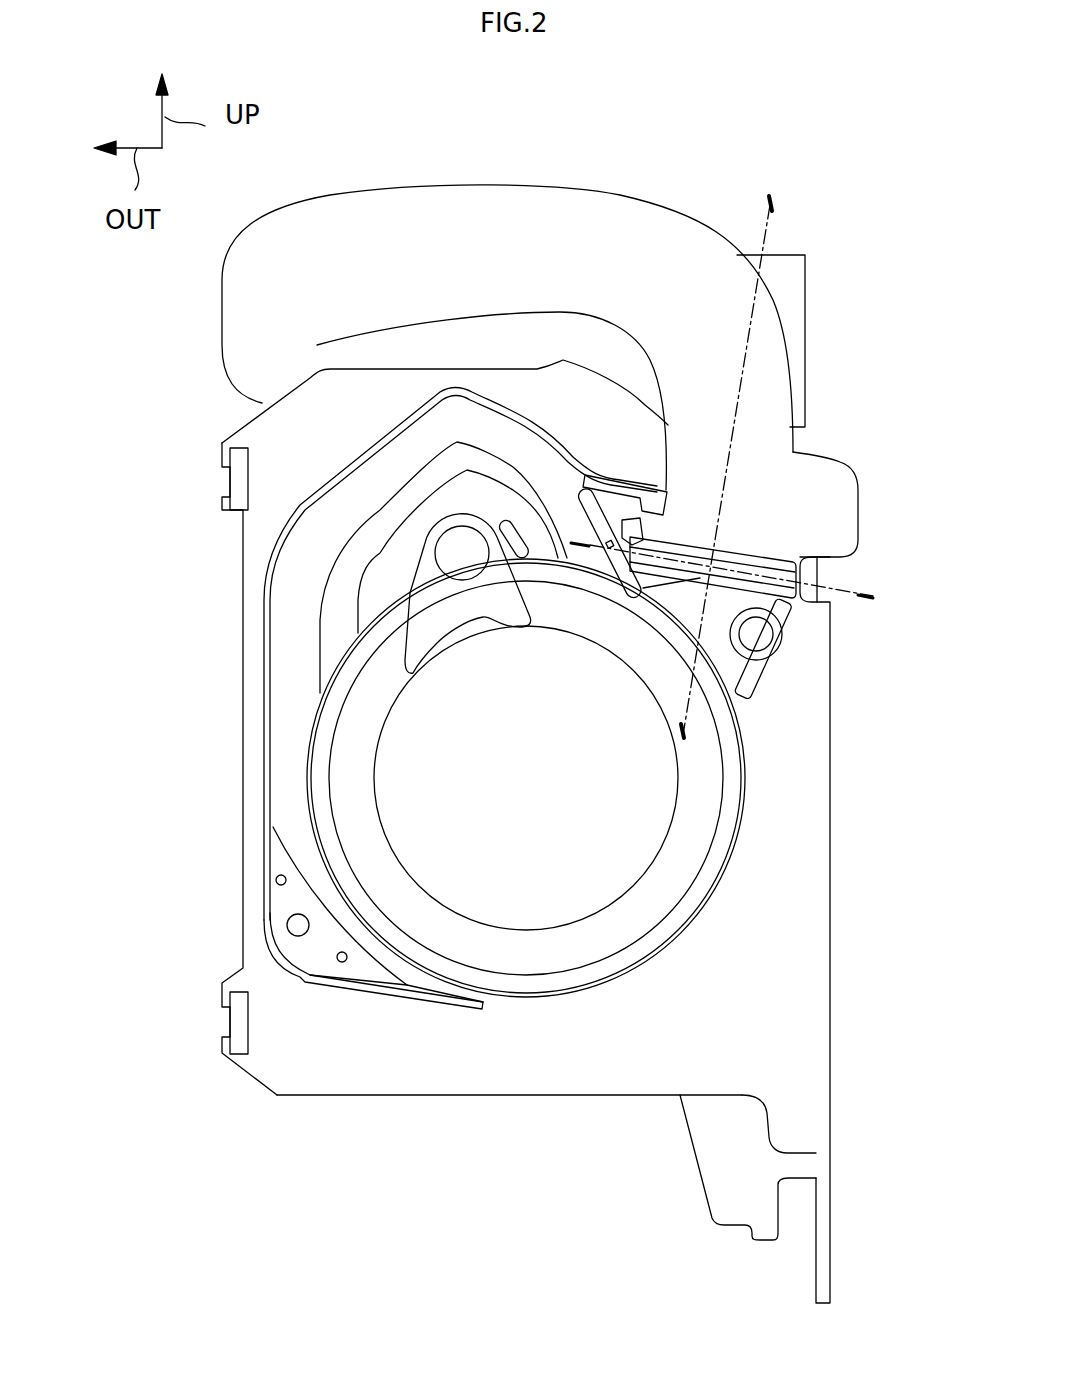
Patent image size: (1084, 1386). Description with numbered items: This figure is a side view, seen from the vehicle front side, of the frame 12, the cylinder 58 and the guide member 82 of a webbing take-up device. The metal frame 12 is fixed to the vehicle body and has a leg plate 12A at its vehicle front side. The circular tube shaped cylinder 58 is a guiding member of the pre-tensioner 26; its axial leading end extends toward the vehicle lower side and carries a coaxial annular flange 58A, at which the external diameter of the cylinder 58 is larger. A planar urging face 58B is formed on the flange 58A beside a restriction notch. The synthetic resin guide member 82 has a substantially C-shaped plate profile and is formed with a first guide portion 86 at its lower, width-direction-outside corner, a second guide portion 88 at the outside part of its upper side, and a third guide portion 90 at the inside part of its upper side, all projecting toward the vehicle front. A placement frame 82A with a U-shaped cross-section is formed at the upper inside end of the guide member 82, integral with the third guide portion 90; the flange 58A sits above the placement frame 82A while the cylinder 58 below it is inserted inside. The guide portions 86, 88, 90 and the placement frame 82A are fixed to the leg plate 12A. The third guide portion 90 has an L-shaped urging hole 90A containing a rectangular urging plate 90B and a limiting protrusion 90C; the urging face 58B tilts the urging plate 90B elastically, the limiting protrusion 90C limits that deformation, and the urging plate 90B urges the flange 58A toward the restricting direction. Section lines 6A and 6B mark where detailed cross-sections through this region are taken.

The frame 12 is at (833, 848).
The leg plate 12A is at (525, 1098).
The pre-tensioner 26 is at (808, 437).
The cylinder 58 is at (677, 205).
The flange 58A is at (790, 557).
The urging face 58B is at (708, 541).
The guide member 82 is at (332, 457).
The placement frame 82A is at (740, 702).
The first guide portion 86 is at (310, 960).
The second guide portion 88 is at (432, 553).
The third guide portion 90 is at (607, 485).
The urging hole 90A is at (631, 503).
The urging plate 90B is at (667, 510).
The limiting protrusion 90C is at (560, 540).
The section line 6A is at (781, 209).
The section line 6B is at (577, 560).